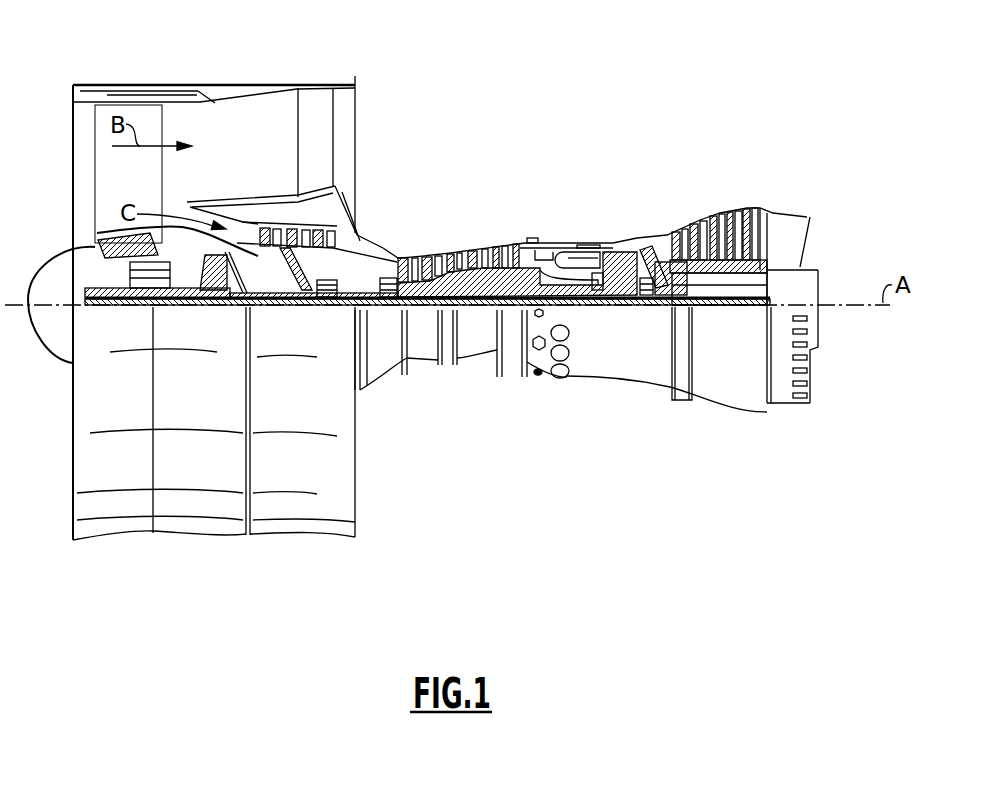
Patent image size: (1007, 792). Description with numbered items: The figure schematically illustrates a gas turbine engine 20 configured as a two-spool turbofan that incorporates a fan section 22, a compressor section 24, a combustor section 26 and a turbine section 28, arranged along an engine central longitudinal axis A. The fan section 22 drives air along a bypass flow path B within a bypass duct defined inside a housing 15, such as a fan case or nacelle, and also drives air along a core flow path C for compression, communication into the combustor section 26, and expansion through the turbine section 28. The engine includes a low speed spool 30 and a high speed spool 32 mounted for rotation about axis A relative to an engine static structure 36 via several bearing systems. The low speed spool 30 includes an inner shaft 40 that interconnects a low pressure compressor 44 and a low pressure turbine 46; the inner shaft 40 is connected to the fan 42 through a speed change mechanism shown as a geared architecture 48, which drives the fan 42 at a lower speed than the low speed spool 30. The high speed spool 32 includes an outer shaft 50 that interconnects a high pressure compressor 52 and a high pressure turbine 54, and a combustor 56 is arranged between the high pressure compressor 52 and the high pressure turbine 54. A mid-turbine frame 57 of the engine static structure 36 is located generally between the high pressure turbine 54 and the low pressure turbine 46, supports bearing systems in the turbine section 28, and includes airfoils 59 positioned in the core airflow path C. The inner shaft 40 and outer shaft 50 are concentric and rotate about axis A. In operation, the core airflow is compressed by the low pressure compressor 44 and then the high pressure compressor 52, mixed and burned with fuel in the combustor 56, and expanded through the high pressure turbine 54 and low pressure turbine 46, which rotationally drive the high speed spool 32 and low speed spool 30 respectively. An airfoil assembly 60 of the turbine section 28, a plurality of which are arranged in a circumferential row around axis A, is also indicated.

The housing 15 is at (217, 87).
The gas turbine engine 20 is at (600, 104).
The fan section 22 is at (160, 78).
The compressor section 24 is at (398, 227).
The combustor section 26 is at (570, 214).
The turbine section 28 is at (702, 177).
The low speed spool 30 is at (480, 330).
The high speed spool 32 is at (513, 262).
The engine static structure 36 is at (513, 389).
The inner shaft 40 is at (377, 310).
The fan 42 is at (143, 186).
The low pressure compressor 44 is at (303, 232).
The low pressure turbine 46 is at (722, 213).
The geared architecture 48 is at (215, 292).
The outer shaft 50 is at (584, 293).
The high pressure compressor 52 is at (465, 252).
The high pressure turbine 54 is at (620, 246).
The combustor 56 is at (571, 262).
The mid-turbine frame 57 is at (661, 226).
The airfoils 59 is at (672, 277).
The airfoil assembly 60 is at (692, 227).